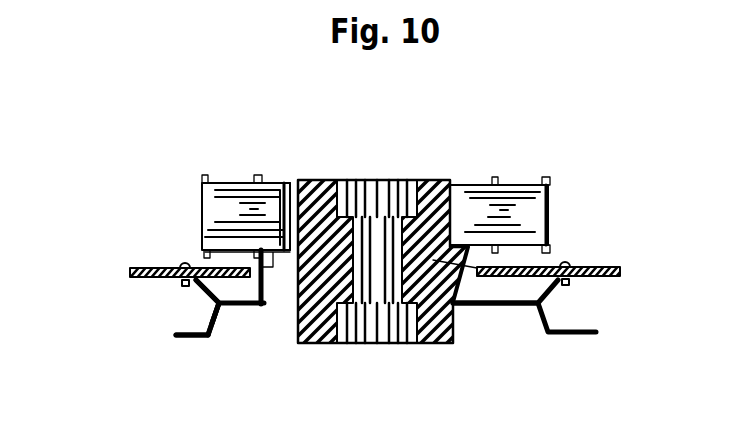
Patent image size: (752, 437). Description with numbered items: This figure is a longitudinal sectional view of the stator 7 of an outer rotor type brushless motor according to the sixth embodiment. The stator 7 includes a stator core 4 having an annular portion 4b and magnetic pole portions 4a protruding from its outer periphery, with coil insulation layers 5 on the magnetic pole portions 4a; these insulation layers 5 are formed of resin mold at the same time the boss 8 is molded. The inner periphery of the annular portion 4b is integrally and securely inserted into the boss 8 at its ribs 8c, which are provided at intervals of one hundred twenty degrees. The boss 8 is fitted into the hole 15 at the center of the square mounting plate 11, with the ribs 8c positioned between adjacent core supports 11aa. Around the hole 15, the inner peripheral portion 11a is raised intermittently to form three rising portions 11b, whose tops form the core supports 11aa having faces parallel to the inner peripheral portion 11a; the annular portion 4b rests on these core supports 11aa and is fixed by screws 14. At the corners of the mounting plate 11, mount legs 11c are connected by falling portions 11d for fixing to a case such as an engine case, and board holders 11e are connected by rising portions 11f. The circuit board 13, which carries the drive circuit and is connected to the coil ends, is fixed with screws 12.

The stator core 4 is at (252, 200).
The magnetic pole portions 4a is at (218, 205).
The annular portion 4b is at (273, 183).
The coil insulation layers 5 is at (228, 180).
The stator 7 is at (197, 202).
The boss 8 is at (311, 326).
The ribs 8c is at (477, 268).
The mounting plate 11 is at (198, 342).
The inner peripheral portion 11a is at (463, 307).
The core supports 11aa is at (218, 237).
The rising portions 11b is at (203, 250).
The mount legs 11c is at (172, 341).
The falling portions 11d is at (217, 323).
The board holders 11e is at (195, 283).
The rising portions 11f is at (203, 298).
The screws 12 is at (183, 262).
The circuit board 13 is at (132, 273).
The screws 14 is at (287, 178).
The hole 15 is at (368, 305).